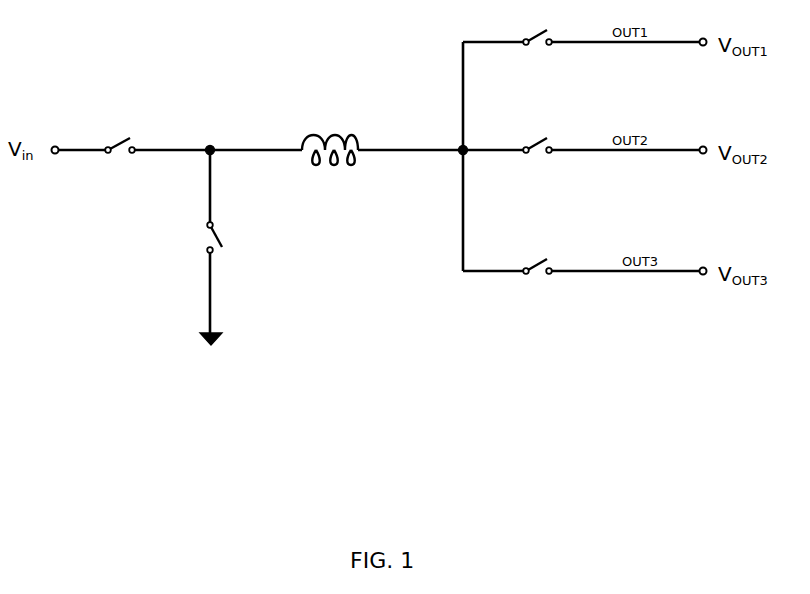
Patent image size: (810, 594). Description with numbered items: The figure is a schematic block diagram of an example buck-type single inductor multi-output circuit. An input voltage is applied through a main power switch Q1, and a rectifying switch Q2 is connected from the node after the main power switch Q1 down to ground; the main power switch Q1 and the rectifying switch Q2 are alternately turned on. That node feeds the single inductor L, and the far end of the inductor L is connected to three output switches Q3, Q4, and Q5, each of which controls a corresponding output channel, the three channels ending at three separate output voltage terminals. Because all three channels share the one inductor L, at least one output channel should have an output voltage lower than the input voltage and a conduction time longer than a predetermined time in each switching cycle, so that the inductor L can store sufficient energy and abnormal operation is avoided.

The main power switch Q1 is at (120, 158).
The rectifying switch Q2 is at (231, 237).
The switch Q3 is at (537, 50).
The switch Q4 is at (537, 158).
The switch Q5 is at (537, 279).
The inductor L is at (330, 137).